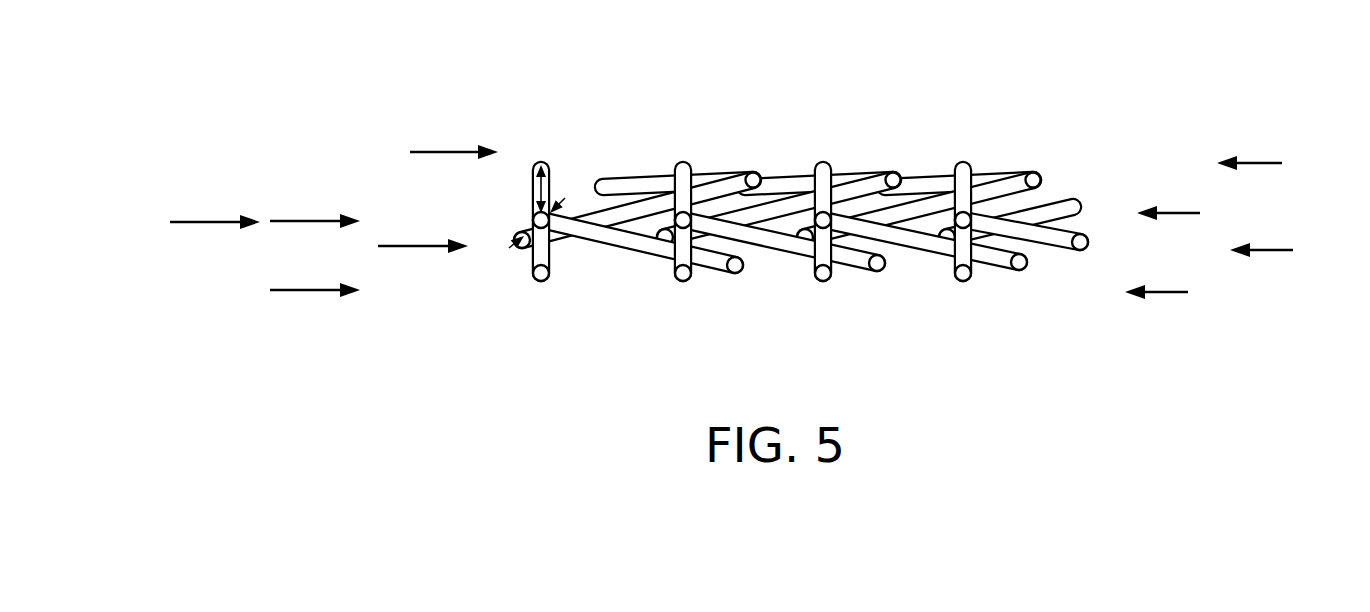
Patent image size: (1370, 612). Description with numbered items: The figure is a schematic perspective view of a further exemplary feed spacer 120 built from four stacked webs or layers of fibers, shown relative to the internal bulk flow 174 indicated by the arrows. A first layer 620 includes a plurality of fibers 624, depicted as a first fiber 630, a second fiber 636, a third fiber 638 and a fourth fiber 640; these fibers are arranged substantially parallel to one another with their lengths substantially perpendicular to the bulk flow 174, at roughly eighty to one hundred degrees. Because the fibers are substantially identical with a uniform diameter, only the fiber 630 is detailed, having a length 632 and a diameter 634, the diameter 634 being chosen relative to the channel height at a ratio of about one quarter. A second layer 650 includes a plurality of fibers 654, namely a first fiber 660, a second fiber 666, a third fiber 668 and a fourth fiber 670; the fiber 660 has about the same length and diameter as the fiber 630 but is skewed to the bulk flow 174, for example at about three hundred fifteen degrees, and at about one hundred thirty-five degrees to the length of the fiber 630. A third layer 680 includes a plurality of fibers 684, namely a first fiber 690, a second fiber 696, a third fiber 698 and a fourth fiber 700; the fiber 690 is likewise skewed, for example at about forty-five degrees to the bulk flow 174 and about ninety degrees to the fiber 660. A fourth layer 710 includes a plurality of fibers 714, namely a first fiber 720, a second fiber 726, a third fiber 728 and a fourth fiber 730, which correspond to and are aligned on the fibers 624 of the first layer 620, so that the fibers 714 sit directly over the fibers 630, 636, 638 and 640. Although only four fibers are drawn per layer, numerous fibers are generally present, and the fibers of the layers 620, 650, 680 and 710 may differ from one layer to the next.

The feed spacer 120 is at (649, 82).
The bulk flow 174 is at (202, 222).
The second layer 650 is at (313, 219).
The fourth layer 710 is at (305, 287).
The plurality of fibers 684 is at (412, 244).
The plurality of fibers 624 is at (438, 150).
The first layer 620 is at (1265, 162).
The plurality of fibers 654 is at (1178, 213).
The third layer 680 is at (1272, 250).
The plurality of fibers 714 is at (1175, 292).
The first fiber 630 is at (556, 175).
The length 632 is at (533, 181).
The diameter 634 is at (552, 228).
The second fiber 636 is at (683, 162).
The third fiber 638 is at (823, 162).
The fourth fiber 640 is at (966, 164).
The first fiber 660 is at (750, 172).
The second fiber 666 is at (890, 172).
The third fiber 668 is at (1036, 176).
The fourth fiber 670 is at (1048, 208).
The first fiber 690 is at (636, 247).
The second fiber 696 is at (770, 238).
The third fiber 698 is at (913, 238).
The fourth fiber 700 is at (1083, 252).
The first fiber 720 is at (541, 281).
The second fiber 726 is at (683, 281).
The third fiber 728 is at (823, 281).
The fourth fiber 730 is at (963, 281).